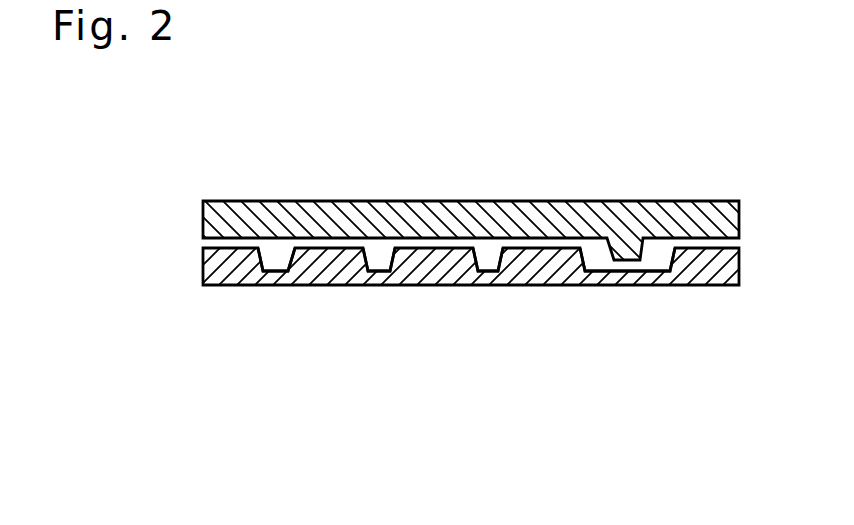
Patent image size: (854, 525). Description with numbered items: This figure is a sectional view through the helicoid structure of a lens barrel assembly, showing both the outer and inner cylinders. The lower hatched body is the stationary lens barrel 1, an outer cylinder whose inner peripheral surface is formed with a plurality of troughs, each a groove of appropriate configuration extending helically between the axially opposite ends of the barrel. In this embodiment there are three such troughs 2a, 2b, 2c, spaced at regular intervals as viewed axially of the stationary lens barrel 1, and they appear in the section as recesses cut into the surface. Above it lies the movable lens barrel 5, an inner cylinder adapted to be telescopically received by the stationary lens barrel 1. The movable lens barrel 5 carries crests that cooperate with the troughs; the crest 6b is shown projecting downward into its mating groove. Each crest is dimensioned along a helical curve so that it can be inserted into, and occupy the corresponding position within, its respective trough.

The stationary lens barrel 1 is at (227, 260).
The movable lens barrel 5 is at (470, 222).
The trough 2a is at (487, 262).
The trough 2b is at (273, 262).
The trough 2c is at (383, 262).
The crest 6b is at (628, 262).